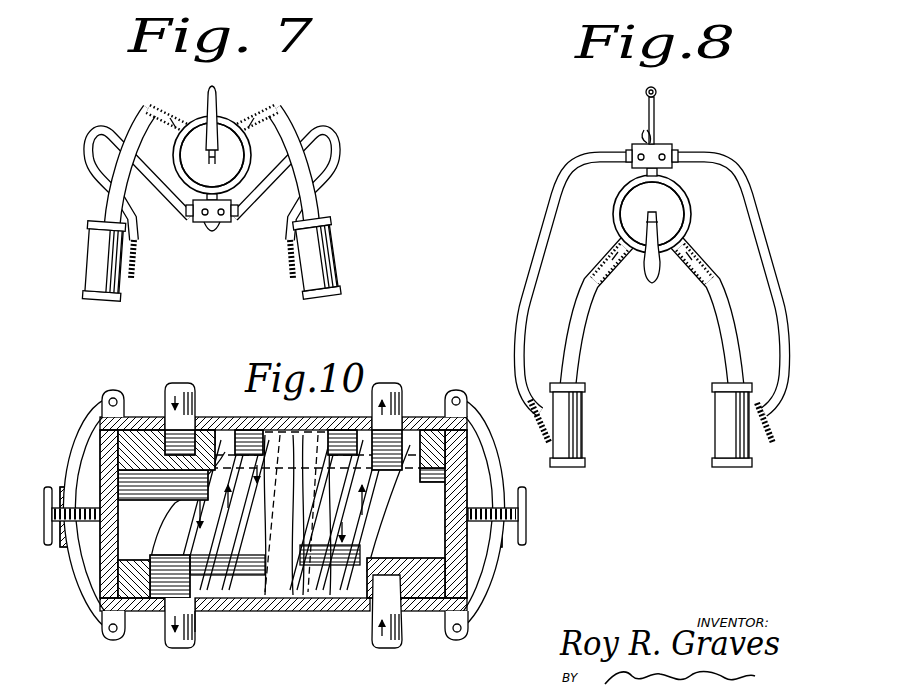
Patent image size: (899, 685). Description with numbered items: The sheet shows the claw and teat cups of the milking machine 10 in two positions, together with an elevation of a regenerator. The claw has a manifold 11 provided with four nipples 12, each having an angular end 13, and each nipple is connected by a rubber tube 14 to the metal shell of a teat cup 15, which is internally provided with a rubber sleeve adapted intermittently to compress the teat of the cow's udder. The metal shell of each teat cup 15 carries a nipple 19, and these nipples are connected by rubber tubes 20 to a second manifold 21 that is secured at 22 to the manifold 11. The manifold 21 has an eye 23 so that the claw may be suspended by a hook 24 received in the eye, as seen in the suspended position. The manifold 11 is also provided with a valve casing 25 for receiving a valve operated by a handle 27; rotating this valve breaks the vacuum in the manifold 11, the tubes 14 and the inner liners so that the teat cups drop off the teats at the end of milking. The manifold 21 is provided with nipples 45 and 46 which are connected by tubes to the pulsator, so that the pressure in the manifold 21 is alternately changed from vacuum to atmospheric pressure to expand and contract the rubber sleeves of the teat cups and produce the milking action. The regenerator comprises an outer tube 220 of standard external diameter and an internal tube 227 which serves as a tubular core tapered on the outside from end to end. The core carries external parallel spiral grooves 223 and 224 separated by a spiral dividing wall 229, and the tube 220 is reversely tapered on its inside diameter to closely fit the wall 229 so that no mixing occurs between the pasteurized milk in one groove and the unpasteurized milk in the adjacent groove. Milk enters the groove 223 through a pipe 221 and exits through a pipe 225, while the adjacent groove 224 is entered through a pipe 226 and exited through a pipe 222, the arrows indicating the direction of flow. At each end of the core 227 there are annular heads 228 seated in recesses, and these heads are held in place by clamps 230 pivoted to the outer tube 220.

In FIG. 7, the milking machine 10 is at (283, 110).
In FIG. 8, the milking machine 10 is at (738, 195).
In FIG. 7, the manifold 11 is at (251, 155).
In FIG. 8, the manifold 11 is at (691, 213).
In FIG. 7, the nipple 12 is at (175, 115).
In FIG. 8, the nipple 12 is at (611, 256).
In FIG. 7, the angular end 13 is at (165, 105).
In FIG. 8, the angular end 13 is at (599, 280).
In FIG. 7, the rubber tube 14 is at (107, 210).
In FIG. 8, the rubber tube 14 is at (586, 327).
In FIG. 7, the teat cup 15 is at (92, 250).
In FIG. 8, the teat cup 15 is at (583, 418).
In FIG. 7, the nipple 19 is at (130, 283).
In FIG. 8, the nipple 19 is at (544, 434).
In FIG. 7, the rubber tube 20 is at (85, 157).
In FIG. 8, the rubber tube 20 is at (521, 298).
In FIG. 7, the manifold 21 is at (228, 224).
In FIG. 8, the manifold 21 is at (666, 153).
In FIG. 7, the securing point 22 is at (224, 203).
In FIG. 8, the securing point 22 is at (647, 174).
In FIG. 7, the eye 23 is at (212, 237).
In FIG. 8, the eye 23 is at (659, 139).
In FIG. 8, the hook 24 is at (648, 102).
In FIG. 7, the valve casing 25 is at (193, 145).
In FIG. 8, the valve casing 25 is at (633, 203).
In FIG. 7, the handle 27 is at (213, 86).
In FIG. 8, the handle 27 is at (651, 285).
In FIG. 7, the nipple 45 is at (203, 216).
In FIG. 8, the nipple 45 is at (678, 153).
In FIG. 7, the nipple 46 is at (222, 216).
In FIG. 8, the nipple 46 is at (639, 155).
In FIG. 10, the outer tube 220 is at (141, 425).
In FIG. 10, the pipe 221 is at (194, 402).
In FIG. 10, the pipe 222 is at (196, 632).
In FIG. 10, the spiral groove 223 is at (255, 440).
In FIG. 10, the spiral groove 224 is at (177, 599).
In FIG. 10, the pipe 225 is at (378, 400).
In FIG. 10, the pipe 226 is at (377, 627).
In FIG. 10, the internal tube 227 is at (428, 553).
In FIG. 10, the annular head 228 is at (117, 532).
In FIG. 10, the spiral dividing wall 229 is at (255, 530).
In FIG. 10, the clamp 230 is at (88, 440).